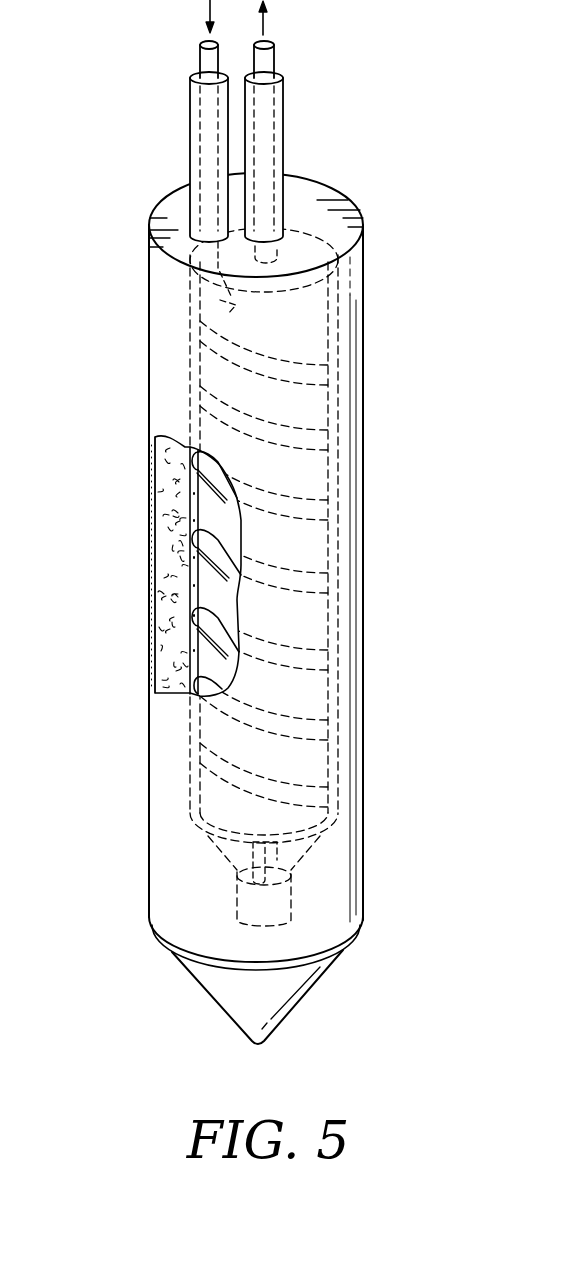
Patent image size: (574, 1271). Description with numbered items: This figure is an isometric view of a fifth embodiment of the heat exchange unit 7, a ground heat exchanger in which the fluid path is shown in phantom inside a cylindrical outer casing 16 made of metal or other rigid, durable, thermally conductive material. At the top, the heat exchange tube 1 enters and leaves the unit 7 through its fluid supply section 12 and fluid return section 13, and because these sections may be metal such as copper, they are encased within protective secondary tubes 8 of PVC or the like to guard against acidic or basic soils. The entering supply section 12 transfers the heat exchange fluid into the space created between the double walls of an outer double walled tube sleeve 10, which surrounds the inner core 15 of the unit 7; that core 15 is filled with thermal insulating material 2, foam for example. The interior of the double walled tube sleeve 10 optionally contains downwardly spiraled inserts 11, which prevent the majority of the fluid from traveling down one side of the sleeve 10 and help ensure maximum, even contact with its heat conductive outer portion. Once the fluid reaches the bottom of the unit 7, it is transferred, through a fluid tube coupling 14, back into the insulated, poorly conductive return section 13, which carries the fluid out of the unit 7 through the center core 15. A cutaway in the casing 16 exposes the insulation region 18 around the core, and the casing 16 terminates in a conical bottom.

The heat exchange tube 1 is at (207, 127).
The thermal insulating material 2 is at (292, 233).
The heat exchange unit 7 is at (365, 572).
The protective secondary tubes 8 is at (186, 167).
The double walled tube sleeve 10 is at (338, 297).
The downwardly spiraled inserts 11 is at (227, 350).
The fluid supply section 12 is at (218, 302).
The fluid return section 13 is at (267, 128).
The fluid tube coupling 14 is at (243, 897).
The cylindrical core 15 is at (218, 588).
The cylindrical outer casing 16 is at (367, 400).
The filling material 18 is at (165, 540).